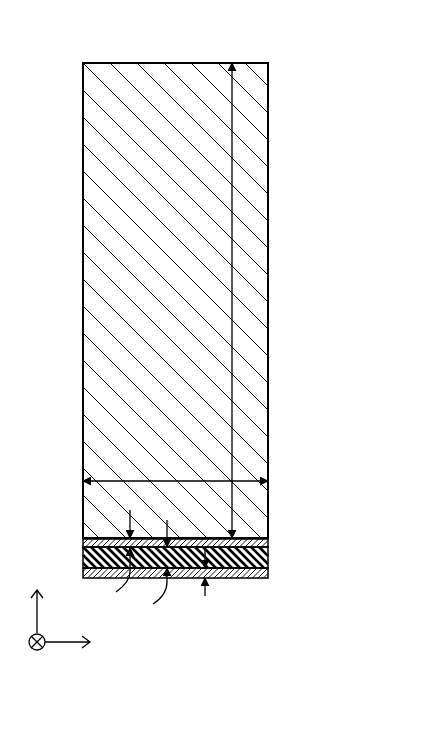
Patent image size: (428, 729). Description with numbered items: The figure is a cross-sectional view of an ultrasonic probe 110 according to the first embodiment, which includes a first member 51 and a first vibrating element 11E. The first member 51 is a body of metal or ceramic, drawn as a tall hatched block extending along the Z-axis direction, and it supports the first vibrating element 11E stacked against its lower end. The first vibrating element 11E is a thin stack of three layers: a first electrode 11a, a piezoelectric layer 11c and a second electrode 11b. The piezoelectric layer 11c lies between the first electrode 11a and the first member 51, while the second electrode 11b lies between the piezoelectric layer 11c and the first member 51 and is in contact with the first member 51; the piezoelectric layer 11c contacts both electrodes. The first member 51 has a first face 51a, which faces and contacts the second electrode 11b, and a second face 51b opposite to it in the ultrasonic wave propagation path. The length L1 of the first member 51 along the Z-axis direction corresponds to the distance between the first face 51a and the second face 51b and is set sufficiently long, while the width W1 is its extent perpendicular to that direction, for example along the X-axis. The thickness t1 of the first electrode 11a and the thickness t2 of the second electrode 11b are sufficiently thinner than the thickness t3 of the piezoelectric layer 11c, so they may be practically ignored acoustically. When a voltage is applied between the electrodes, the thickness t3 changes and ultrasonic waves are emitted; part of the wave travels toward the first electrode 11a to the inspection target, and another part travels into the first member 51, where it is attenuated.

The ultrasonic probe 110 is at (293, 70).
The first member 51 is at (108, 283).
The first face 51a is at (108, 537).
The second face 51b is at (128, 63).
The first vibrating element 11E is at (235, 555).
The first electrode 11a is at (268, 573).
The second electrode 11b is at (268, 543).
The piezoelectric layer 11c is at (268, 558).
The length L1 is at (232, 312).
The width W1 is at (253, 476).
The thickness of the first electrode t1 is at (204, 584).
The thickness of the second electrode t2 is at (115, 563).
The thickness of the piezoelectric layer t3 is at (152, 574).